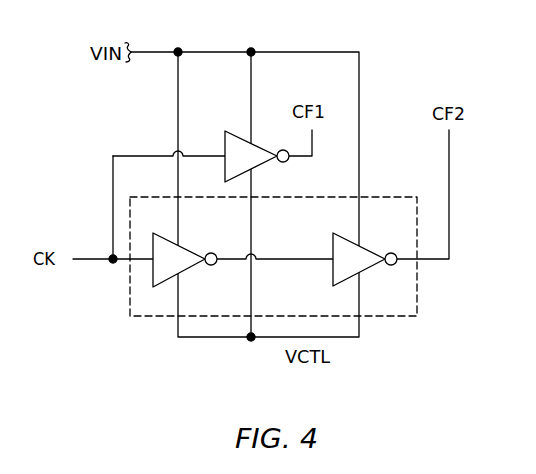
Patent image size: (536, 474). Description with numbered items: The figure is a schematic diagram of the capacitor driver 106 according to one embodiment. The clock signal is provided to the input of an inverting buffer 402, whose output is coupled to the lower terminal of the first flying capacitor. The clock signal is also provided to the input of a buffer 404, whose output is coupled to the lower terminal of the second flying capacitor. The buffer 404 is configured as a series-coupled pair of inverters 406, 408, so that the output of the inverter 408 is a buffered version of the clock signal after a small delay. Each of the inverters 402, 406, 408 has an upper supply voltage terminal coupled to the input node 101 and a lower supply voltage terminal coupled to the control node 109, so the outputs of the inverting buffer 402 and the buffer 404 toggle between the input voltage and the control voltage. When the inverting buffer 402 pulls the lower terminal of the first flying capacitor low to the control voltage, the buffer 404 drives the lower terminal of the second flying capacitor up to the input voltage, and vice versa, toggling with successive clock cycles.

The input node 101 is at (250, 50).
The capacitor driver 106 is at (441, 78).
The control node 109 is at (250, 339).
The inverting buffer 402 is at (242, 131).
The buffer 404 is at (376, 197).
The inverter 406 is at (190, 244).
The inverter 408 is at (332, 268).